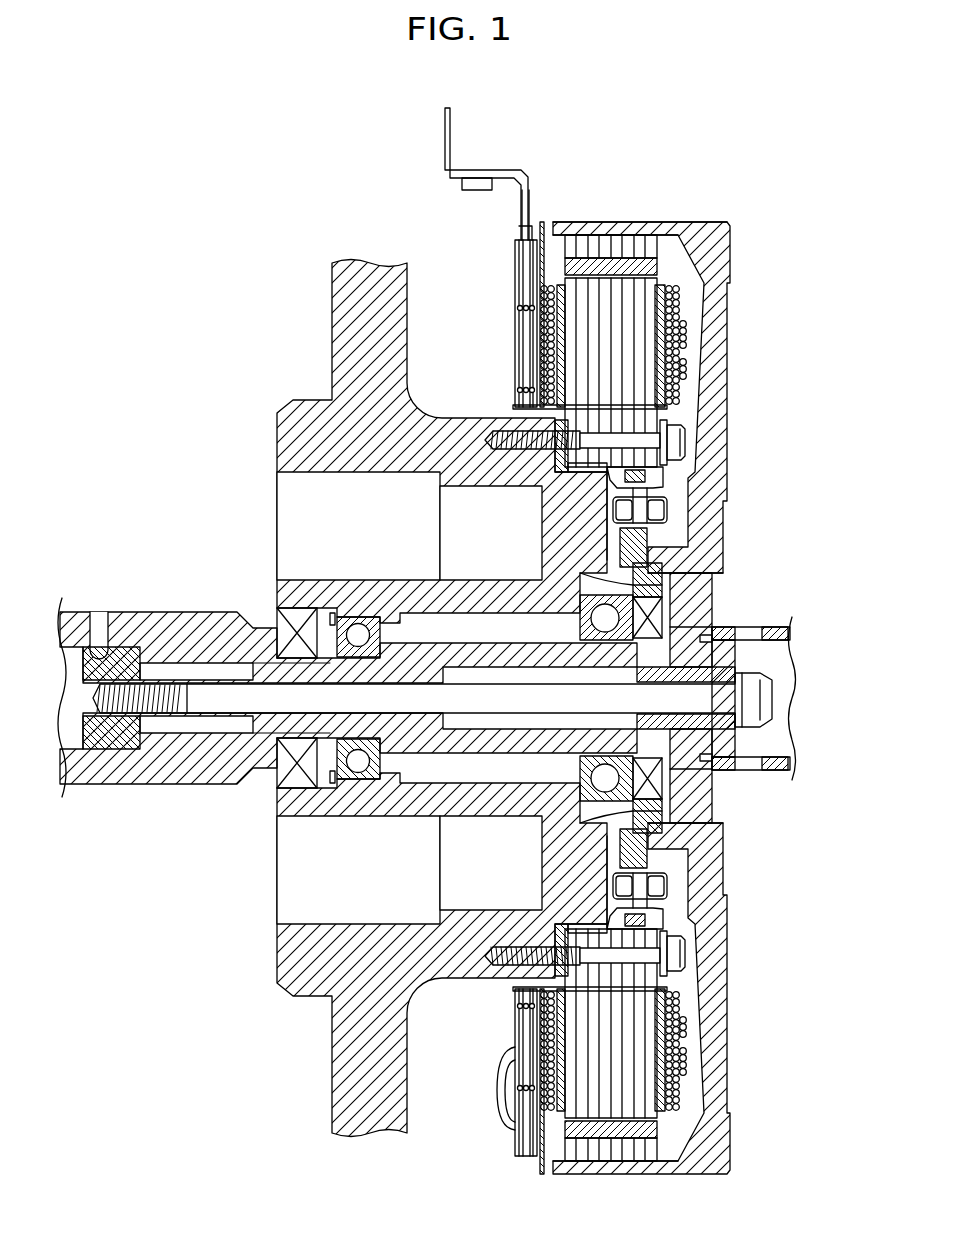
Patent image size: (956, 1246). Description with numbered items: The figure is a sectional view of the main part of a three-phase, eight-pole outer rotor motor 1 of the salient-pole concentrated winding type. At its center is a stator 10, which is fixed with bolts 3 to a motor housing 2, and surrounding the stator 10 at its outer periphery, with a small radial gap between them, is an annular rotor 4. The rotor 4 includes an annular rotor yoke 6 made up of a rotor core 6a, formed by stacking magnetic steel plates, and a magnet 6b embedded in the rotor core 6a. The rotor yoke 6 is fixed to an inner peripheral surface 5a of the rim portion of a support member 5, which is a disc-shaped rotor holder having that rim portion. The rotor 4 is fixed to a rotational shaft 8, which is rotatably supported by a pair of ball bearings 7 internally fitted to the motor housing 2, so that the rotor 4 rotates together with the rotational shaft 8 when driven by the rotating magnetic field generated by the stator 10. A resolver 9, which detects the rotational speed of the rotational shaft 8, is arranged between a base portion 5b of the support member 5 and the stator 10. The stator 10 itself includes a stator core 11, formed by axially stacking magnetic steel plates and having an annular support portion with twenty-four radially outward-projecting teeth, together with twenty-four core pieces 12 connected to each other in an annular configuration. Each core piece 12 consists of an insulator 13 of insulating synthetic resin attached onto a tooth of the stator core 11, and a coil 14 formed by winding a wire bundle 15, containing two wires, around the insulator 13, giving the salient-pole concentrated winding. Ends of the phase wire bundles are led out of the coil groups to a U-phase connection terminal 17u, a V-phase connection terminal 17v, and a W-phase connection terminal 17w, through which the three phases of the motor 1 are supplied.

The outer rotor motor 1 is at (725, 189).
The motor housing 2 is at (348, 297).
The bolts 3 is at (677, 442).
The annular rotor 4 is at (643, 222).
The support member 5 is at (671, 666).
The inner peripheral surface 5a is at (627, 254).
The base portion 5b is at (663, 560).
The rotor yoke 6 is at (695, 654).
The rotor core 6a is at (577, 240).
The magnet 6b is at (607, 258).
The ball bearings 7 is at (588, 597).
The rotational shaft 8 is at (693, 608).
The resolver 9 is at (653, 513).
The stator 10 is at (497, 296).
The stator core 11 is at (637, 318).
The core pieces 12 is at (687, 330).
The insulator 13 is at (670, 375).
The coil 14 is at (680, 357).
The wire bundle 15 is at (530, 197).
The U-phase connection terminal 17u is at (536, 166).
The V-phase connection terminal 17v is at (536, 166).
The W-phase connection terminal 17w is at (448, 123).